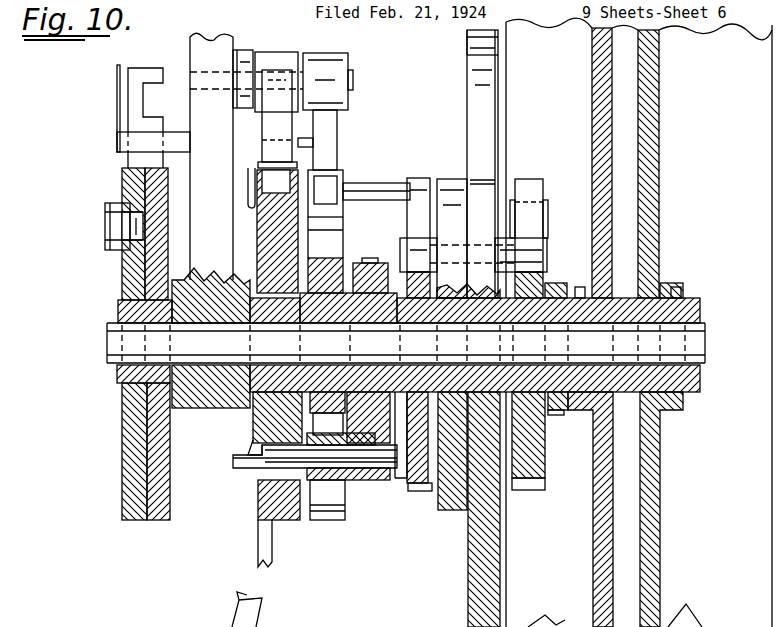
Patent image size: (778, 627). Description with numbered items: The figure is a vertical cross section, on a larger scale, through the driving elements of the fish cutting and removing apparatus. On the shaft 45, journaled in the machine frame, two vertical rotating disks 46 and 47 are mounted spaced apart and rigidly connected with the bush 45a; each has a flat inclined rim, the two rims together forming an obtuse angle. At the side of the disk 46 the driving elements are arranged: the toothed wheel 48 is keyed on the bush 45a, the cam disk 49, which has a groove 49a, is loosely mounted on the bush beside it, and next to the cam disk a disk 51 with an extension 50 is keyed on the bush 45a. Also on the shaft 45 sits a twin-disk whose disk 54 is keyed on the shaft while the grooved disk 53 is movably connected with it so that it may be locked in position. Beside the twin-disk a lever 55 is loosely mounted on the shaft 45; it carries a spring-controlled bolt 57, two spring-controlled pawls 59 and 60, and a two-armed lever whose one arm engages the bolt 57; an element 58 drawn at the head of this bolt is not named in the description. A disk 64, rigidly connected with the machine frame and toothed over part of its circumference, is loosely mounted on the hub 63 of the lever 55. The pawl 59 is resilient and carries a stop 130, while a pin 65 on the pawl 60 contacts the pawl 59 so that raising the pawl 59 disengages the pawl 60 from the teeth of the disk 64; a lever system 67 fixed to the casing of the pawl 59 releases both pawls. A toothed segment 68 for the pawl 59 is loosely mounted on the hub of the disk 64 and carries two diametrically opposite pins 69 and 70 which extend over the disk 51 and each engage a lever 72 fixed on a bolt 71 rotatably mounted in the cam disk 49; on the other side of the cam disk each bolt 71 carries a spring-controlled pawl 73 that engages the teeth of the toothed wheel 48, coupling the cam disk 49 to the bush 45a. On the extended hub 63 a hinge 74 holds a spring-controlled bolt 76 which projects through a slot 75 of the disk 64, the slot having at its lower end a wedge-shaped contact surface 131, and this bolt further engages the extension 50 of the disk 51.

The shaft 45 is at (113, 340).
The bush 45a is at (694, 302).
The rotating disk 46 is at (593, 533).
The rotating disk 47 is at (662, 522).
The toothed wheel 48 is at (537, 455).
The cam disk 49 is at (475, 92).
The groove of the cam disk 49a is at (447, 178).
The extension 50 is at (405, 485).
The disk 51 is at (419, 490).
The disk 53 is at (126, 182).
The disk 54 is at (153, 453).
The lever 55 is at (212, 40).
The bolt 57 is at (138, 70).
The bolt head 58 is at (350, 80).
The pawl 59 is at (258, 166).
The pawl 60 is at (336, 124).
The hub 63 is at (349, 268).
The disk 64 is at (258, 505).
The pin 65 is at (313, 143).
The lever system 67 is at (229, 603).
The toothed segment 68 is at (314, 518).
The pin 69 is at (359, 208).
The pin 70 is at (397, 483).
The bolt 71 is at (549, 255).
The lever 72 is at (422, 171).
The pawl 73 is at (523, 186).
The hinge 74 is at (368, 487).
The slot 75 is at (257, 475).
The bolt 76 is at (233, 452).
The stop 130 is at (249, 191).
The wedge-shaped contact surface 131 is at (250, 445).